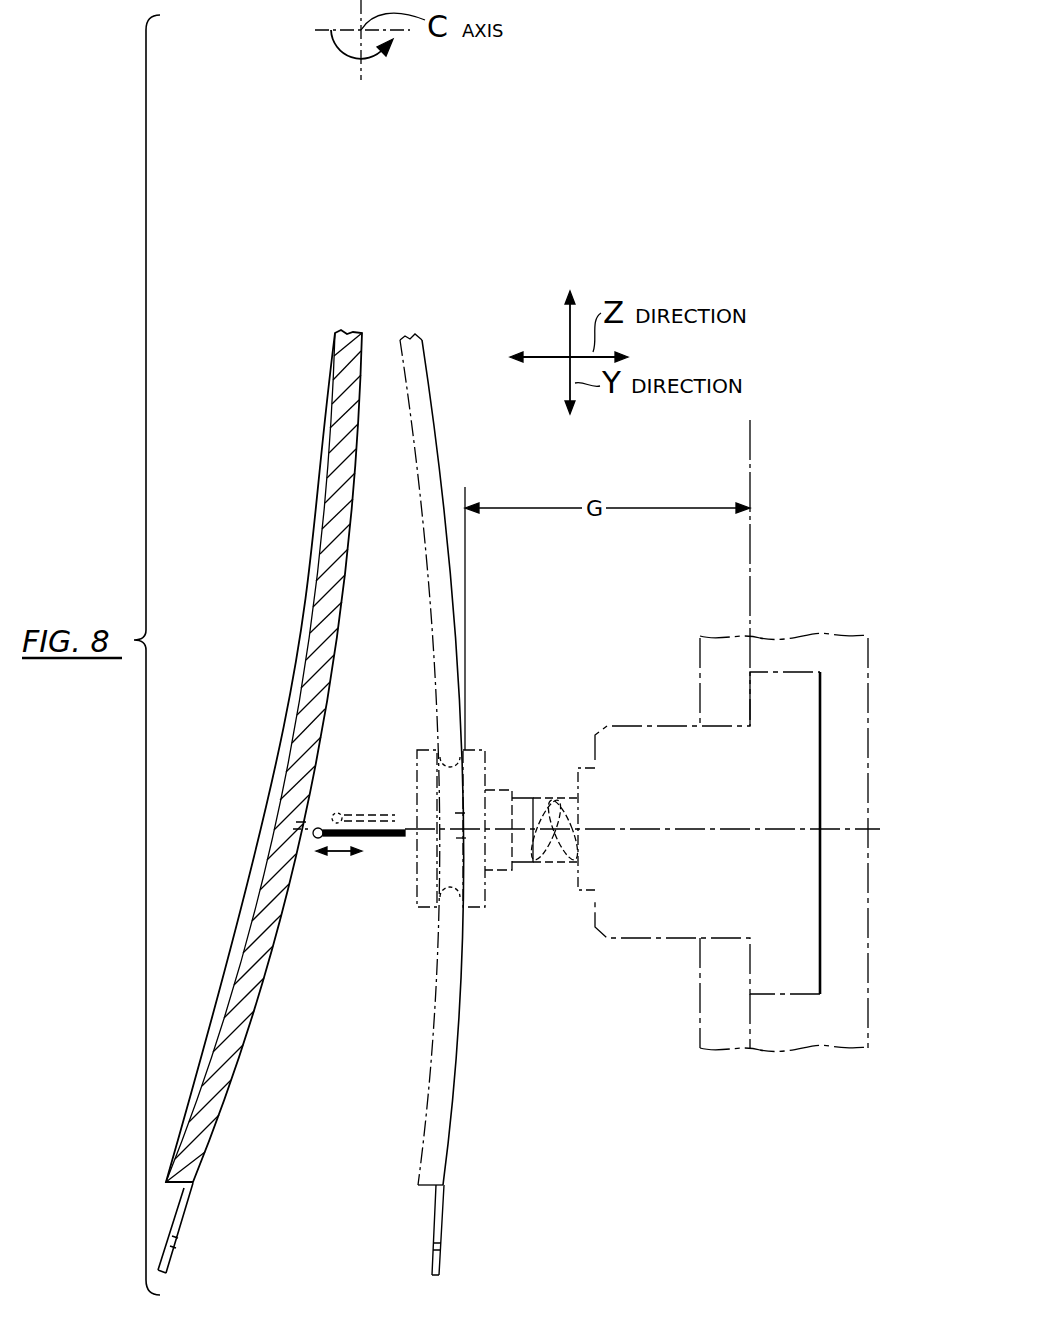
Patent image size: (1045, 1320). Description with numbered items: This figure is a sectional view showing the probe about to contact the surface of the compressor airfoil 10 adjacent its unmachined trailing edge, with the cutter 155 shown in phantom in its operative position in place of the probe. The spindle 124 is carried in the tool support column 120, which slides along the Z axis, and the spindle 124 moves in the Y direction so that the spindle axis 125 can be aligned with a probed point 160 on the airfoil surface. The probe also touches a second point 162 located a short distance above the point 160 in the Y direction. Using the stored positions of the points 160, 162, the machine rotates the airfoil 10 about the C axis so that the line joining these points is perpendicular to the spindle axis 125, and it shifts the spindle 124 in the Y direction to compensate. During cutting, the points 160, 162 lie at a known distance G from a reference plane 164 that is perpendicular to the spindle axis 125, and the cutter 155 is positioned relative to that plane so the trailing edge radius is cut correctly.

The compressor airfoil 10 is at (286, 612).
The cutter 155 is at (478, 750).
The probed point 160 is at (294, 836).
The probed point above section 162 is at (300, 822).
The reference plane 164 is at (750, 570).
The spindle 124 is at (682, 735).
The spindle axis 125 is at (733, 829).
The tool support column 120 is at (700, 985).